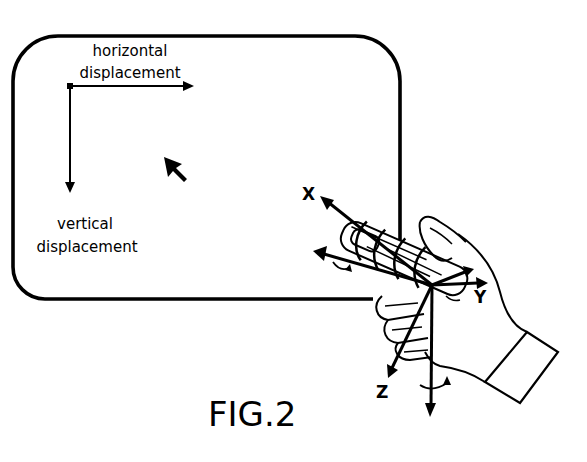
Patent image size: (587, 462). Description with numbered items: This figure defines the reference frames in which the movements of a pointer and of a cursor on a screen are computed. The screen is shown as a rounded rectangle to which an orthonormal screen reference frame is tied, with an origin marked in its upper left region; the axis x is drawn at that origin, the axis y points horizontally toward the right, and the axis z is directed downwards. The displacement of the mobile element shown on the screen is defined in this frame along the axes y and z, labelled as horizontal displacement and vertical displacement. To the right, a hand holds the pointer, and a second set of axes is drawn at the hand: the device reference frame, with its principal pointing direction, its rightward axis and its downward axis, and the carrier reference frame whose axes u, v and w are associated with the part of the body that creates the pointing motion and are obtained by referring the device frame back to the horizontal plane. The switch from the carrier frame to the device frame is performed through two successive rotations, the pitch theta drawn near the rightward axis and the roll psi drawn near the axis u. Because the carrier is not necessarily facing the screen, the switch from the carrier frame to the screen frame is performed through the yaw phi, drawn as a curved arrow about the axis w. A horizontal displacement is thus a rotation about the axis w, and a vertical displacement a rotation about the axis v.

The element screen is at (125, 301).
The element pointer is at (195, 162).
The x axis x is at (69, 77).
The y axis y is at (140, 86).
The z axis z is at (77, 148).
The u axis u is at (364, 265).
The v axis v is at (453, 268).
The w axis w is at (438, 360).
The yaw angle phi is at (440, 391).
The roll angle psi is at (341, 281).
The pitch angle theta is at (453, 307).